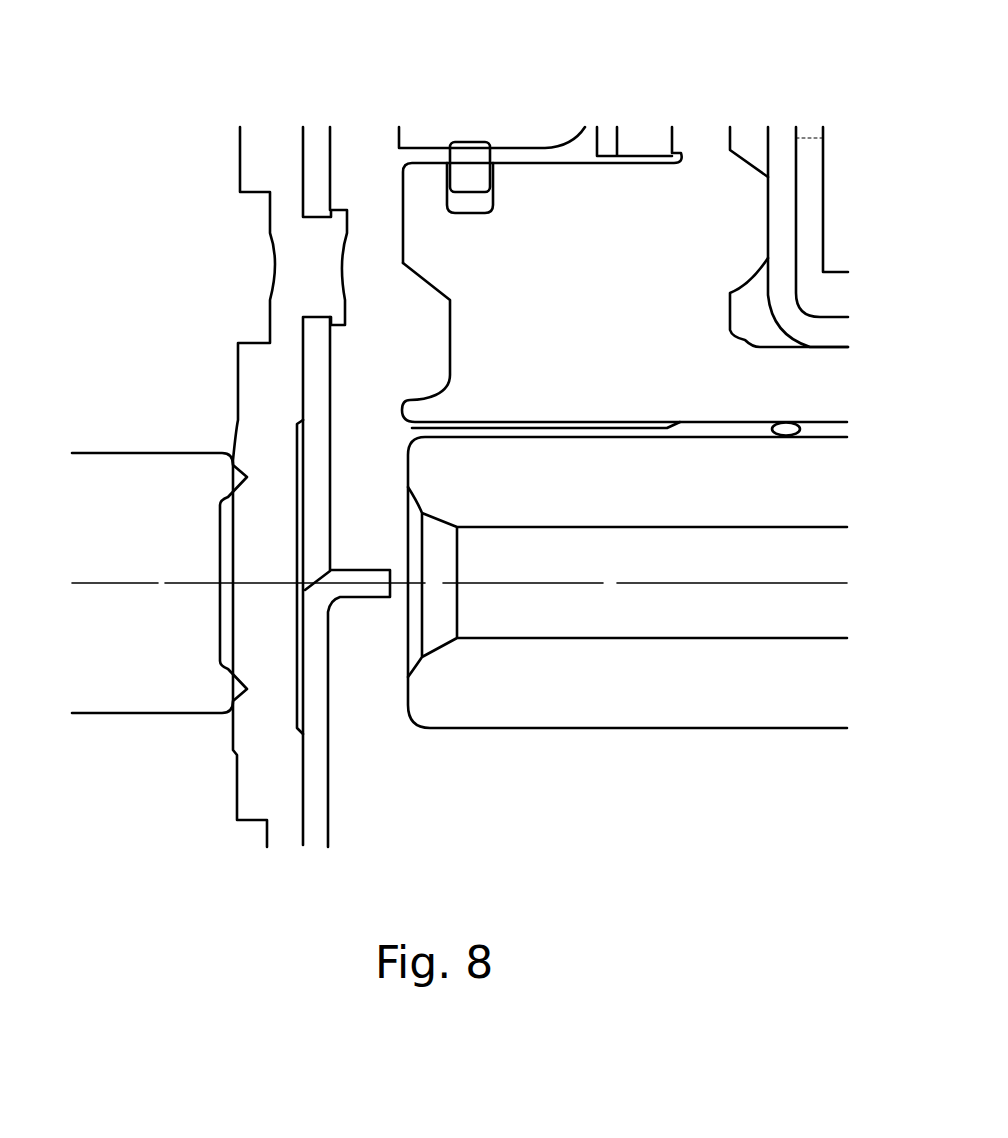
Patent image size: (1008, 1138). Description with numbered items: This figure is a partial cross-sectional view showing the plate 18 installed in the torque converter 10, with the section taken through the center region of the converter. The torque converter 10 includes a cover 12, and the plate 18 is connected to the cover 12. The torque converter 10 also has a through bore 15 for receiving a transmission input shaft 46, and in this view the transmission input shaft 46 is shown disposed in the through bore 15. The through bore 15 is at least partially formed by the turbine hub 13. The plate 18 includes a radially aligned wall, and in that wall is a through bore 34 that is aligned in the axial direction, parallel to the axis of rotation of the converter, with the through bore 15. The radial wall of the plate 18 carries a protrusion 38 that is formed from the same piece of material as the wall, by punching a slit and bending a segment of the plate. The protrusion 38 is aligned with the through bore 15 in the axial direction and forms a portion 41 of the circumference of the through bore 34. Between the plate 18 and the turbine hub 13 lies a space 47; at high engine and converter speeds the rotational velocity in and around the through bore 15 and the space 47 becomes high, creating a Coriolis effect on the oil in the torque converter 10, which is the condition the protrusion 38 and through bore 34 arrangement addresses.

The torque converter 10 is at (128, 108).
The cover 12 is at (257, 370).
The turbine hub 13 is at (525, 193).
The through bore 15 is at (397, 635).
The plate 18 is at (314, 823).
The through bore 34 is at (350, 527).
The protrusion 38 is at (358, 597).
The portion of the circumference 41 is at (330, 513).
The transmission input shaft 46 is at (680, 710).
The space 47 is at (350, 405).